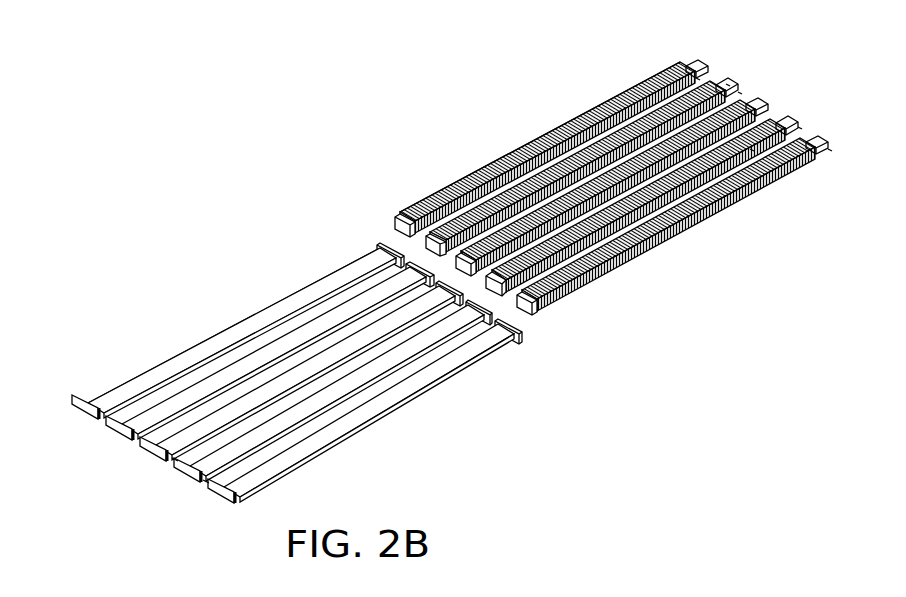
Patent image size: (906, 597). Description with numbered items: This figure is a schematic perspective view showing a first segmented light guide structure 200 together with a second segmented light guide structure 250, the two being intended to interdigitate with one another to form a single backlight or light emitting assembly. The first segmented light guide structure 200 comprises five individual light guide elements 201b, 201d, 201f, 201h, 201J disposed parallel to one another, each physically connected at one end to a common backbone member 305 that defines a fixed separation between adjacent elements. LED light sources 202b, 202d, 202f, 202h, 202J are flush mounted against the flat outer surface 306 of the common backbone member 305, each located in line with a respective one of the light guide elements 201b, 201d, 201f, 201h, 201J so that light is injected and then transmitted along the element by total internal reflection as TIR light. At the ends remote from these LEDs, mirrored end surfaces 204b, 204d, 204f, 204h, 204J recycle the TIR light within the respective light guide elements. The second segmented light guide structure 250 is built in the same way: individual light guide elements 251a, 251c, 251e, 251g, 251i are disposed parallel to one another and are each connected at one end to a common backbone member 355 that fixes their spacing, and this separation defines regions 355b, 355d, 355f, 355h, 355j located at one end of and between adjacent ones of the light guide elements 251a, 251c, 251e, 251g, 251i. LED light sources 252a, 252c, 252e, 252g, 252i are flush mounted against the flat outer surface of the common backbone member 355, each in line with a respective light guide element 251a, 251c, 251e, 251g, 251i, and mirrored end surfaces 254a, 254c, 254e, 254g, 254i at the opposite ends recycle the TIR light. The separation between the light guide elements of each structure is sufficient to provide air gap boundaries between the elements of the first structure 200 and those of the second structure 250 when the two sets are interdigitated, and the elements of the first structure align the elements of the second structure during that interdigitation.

The first segmented light guide structure 200 is at (192, 190).
The second segmented light guide structure 250 is at (463, 86).
The light guide element 201b is at (158, 372).
The light guide element 201d is at (203, 385).
The light guide element 201f is at (240, 402).
The light guide element 201h is at (275, 422).
The light guide element 201J is at (285, 438).
The LED light source 202b is at (92, 412).
The LED light source 202d is at (122, 430).
The LED light source 202f is at (148, 452).
The LED light source 202h is at (186, 466).
The LED light source 202J is at (209, 490).
The mirrored end surface 204b is at (383, 245).
The mirrored end surface 204d is at (413, 268).
The mirrored end surface 204f is at (443, 288).
The mirrored end surface 204h is at (471, 305).
The mirrored end surface 204J is at (513, 340).
The common backbone member 305 is at (175, 460).
The flat outer surface 306 is at (203, 480).
The light guide element 251a is at (468, 192).
The light guide element 251c is at (508, 203).
The light guide element 251e is at (550, 213).
The light guide element 251g is at (588, 243).
The light guide element 251i is at (594, 258).
The LED light source 252a is at (697, 62).
The LED light source 252c is at (735, 80).
The LED light source 252e is at (762, 98).
The LED light source 252g is at (787, 118).
The LED light source 252i is at (832, 136).
The mirrored end surface 254a is at (395, 228).
The mirrored end surface 254c is at (432, 240).
The mirrored end surface 254e is at (455, 250).
The mirrored end surface 254g is at (495, 288).
The mirrored end surface 254i is at (517, 307).
The common backbone member 355 is at (728, 83).
The region 355b is at (830, 150).
The region 355d is at (800, 128).
The region 355f is at (752, 150).
The region 355h is at (740, 93).
The region 355j is at (700, 80).